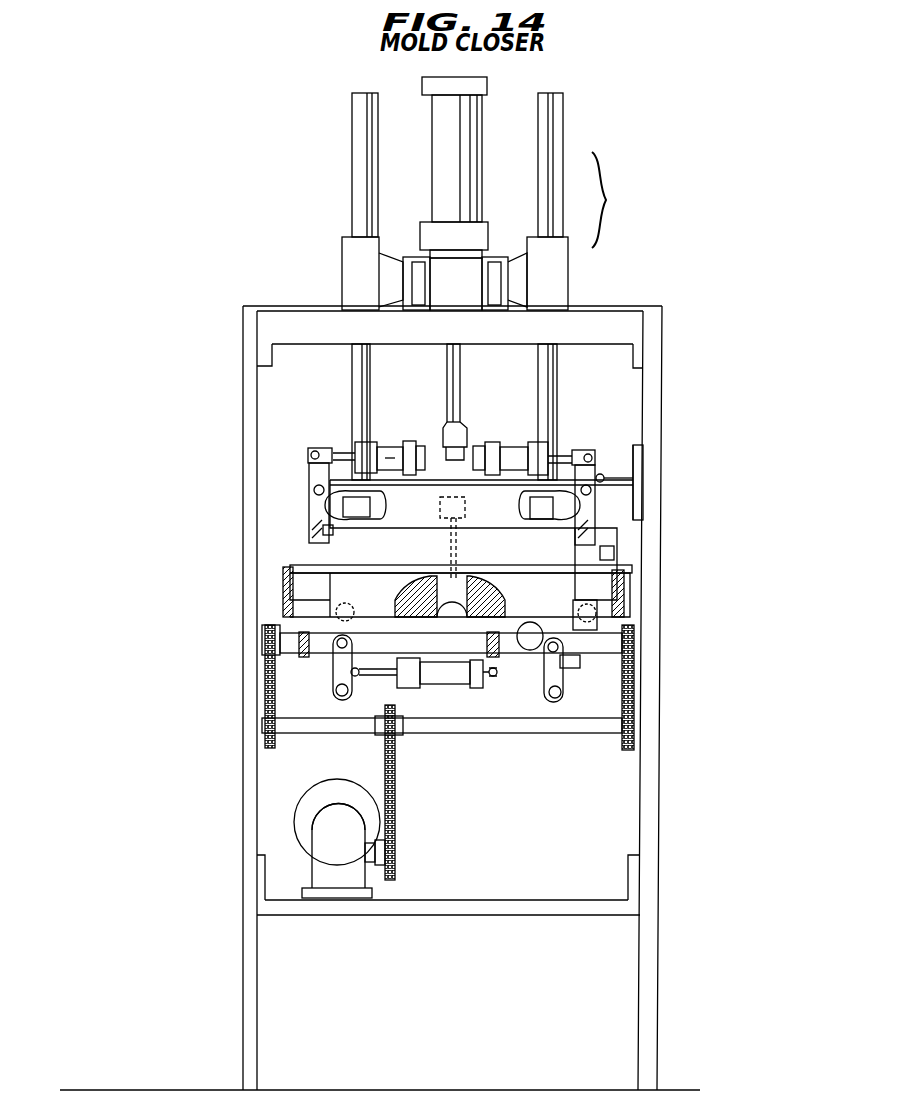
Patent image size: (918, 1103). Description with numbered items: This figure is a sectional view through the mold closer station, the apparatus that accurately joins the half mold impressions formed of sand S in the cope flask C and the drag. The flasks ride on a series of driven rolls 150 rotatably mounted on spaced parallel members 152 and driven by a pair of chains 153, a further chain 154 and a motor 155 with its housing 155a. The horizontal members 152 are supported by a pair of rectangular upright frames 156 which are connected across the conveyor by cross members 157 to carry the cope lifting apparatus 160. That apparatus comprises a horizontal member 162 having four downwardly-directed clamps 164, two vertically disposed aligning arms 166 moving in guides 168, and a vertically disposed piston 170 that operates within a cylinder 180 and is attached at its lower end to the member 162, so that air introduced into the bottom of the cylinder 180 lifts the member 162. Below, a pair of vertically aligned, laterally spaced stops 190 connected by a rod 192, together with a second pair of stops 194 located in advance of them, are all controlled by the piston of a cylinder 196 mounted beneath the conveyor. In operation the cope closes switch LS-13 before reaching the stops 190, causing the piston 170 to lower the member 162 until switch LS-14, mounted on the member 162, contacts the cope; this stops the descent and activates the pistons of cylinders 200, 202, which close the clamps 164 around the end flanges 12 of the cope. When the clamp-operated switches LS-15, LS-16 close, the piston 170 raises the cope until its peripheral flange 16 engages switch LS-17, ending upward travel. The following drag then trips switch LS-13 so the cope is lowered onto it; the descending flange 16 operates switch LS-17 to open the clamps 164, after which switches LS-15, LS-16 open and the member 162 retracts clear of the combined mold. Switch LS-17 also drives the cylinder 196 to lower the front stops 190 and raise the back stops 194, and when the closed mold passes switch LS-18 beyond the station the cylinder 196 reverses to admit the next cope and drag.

The flange 12 is at (333, 531).
The peripheral flange 16 is at (318, 575).
The cope flask C is at (300, 543).
The sand S is at (474, 588).
The driven rolls 150 is at (288, 600).
The spaced parallel members 152 is at (283, 585).
The pair of chains 153 is at (265, 680).
The chain 154 is at (395, 762).
The motor 155 is at (327, 783).
The motor housing 155a is at (330, 820).
The rectangular upright frames 156 is at (243, 413).
The cross members 157 is at (295, 318).
The cope lifting apparatus 160 is at (626, 200).
The horizontal member 162 is at (418, 512).
The clamps 164 is at (306, 526).
The aligning arms 166 is at (358, 361).
The guides 168 is at (358, 144).
The piston 170 is at (447, 361).
The cylinder 180 is at (448, 110).
The stops 190 is at (366, 620).
The rod 192 is at (540, 693).
The stops 194 is at (306, 622).
The cylinder 196 is at (435, 678).
The cylinder 200 is at (394, 455).
The cylinder 202 is at (510, 445).
The switch LS-13 is at (578, 668).
The switch LS-14 is at (510, 532).
The solenoid switch LS-15 is at (547, 514).
The solenoid switch LS-16 is at (380, 501).
The switch LS-17 is at (638, 495).
The switch LS-18 is at (616, 552).